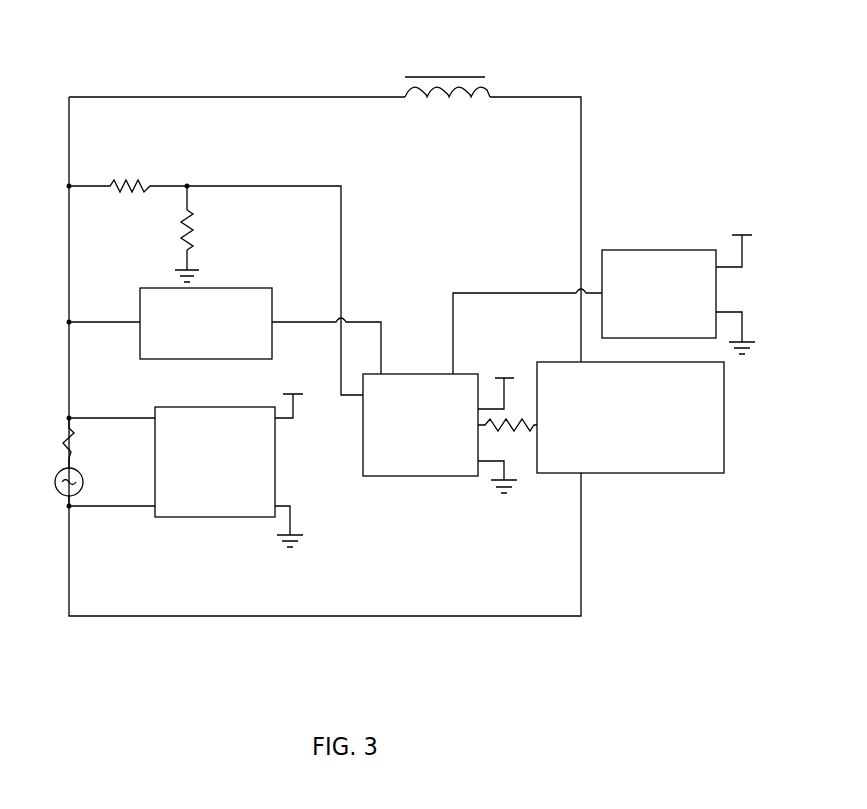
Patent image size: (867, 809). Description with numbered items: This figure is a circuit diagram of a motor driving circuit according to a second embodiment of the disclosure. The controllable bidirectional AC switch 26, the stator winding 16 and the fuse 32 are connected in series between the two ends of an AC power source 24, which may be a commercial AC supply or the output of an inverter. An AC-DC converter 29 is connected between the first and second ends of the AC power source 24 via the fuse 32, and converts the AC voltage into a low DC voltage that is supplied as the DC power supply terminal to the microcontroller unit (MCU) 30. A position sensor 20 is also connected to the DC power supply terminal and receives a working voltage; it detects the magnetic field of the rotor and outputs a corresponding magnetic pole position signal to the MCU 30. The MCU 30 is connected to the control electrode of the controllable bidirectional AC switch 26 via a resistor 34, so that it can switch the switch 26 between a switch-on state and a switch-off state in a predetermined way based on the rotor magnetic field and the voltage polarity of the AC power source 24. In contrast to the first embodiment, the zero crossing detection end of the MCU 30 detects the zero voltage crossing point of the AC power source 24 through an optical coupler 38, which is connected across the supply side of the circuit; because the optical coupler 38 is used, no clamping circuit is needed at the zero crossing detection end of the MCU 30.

The stator winding 16 is at (405, 80).
The position sensor 20 is at (673, 250).
The AC power source 24 is at (79, 470).
The controllable bidirectional AC switch 26 is at (724, 418).
The AC-DC converter 29 is at (195, 407).
The microcontroller unit (MCU) 30 is at (427, 476).
The fuse 32 is at (78, 436).
The resistor 34 is at (510, 428).
The optical coupler 38 is at (256, 288).